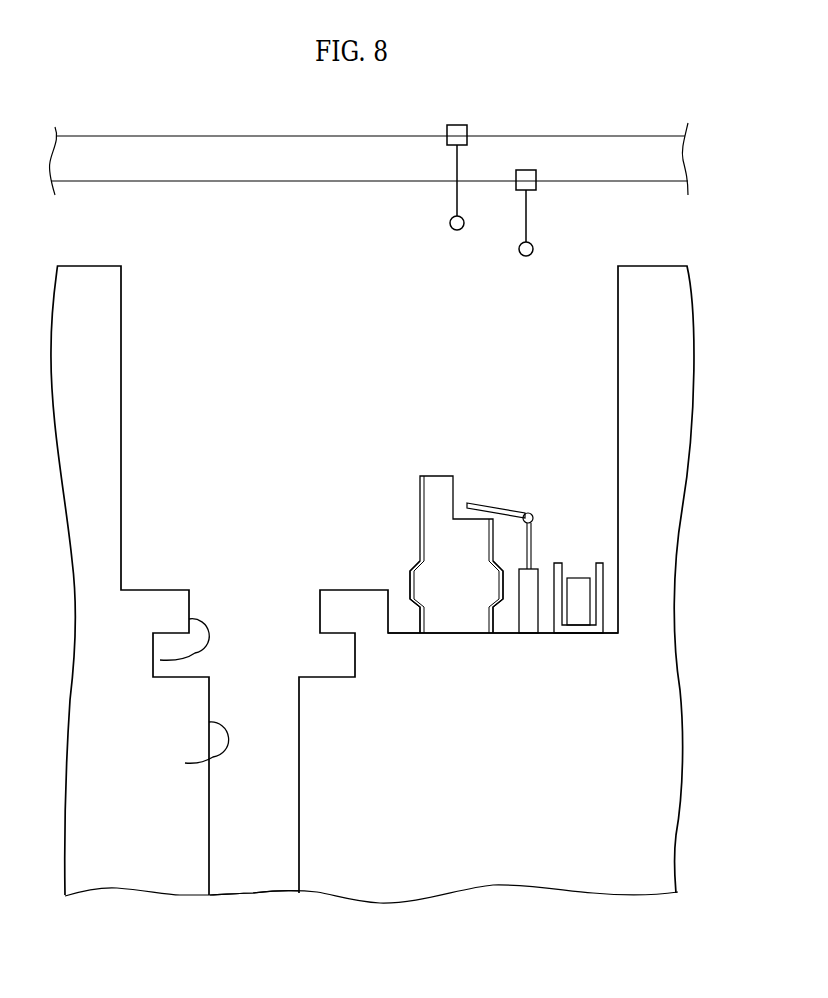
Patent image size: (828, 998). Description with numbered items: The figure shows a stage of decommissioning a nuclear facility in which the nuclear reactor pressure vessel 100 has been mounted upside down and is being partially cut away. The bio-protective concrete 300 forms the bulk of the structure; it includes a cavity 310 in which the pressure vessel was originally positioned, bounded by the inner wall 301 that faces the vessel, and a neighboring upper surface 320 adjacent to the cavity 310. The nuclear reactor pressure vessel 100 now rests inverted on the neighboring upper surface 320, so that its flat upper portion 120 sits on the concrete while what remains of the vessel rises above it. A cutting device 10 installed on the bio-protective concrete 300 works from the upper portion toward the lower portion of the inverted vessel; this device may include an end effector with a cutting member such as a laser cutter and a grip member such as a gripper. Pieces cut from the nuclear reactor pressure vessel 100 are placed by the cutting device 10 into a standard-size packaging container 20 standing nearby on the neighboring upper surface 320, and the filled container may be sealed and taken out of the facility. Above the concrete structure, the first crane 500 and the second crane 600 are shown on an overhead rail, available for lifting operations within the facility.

The second crane 600 is at (456, 203).
The first crane 500 is at (527, 216).
The bio-protective concrete 300 is at (167, 830).
The cavity 310 is at (267, 850).
The neighboring upper surface 320 is at (512, 635).
The inner wall 301 is at (160, 660).
The nuclear reactor pressure vessel 100 is at (418, 500).
The flat upper portion 120 is at (453, 633).
The cutting device 10 is at (533, 530).
The packaging container 20 is at (558, 563).